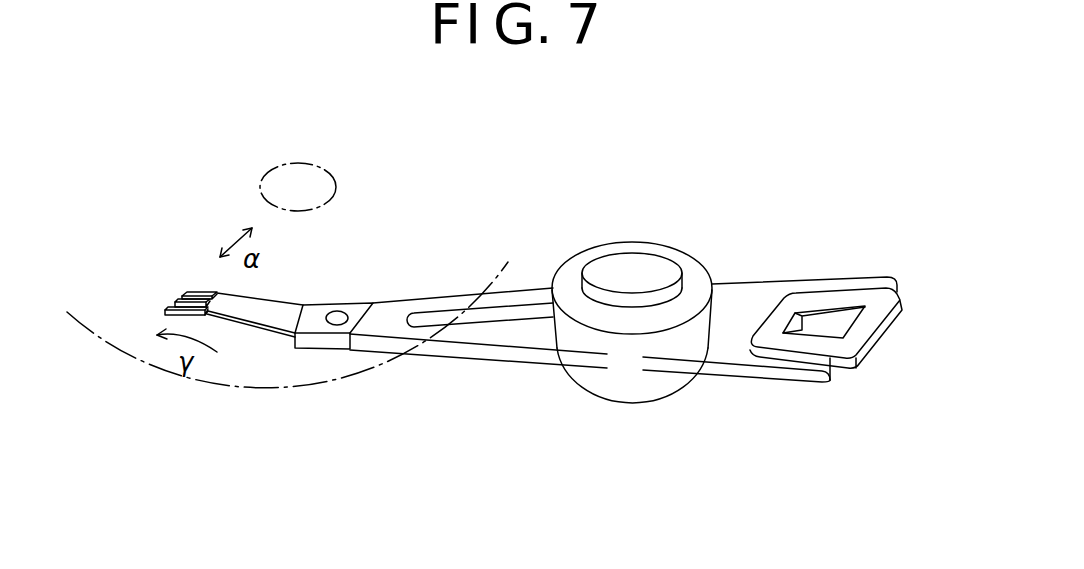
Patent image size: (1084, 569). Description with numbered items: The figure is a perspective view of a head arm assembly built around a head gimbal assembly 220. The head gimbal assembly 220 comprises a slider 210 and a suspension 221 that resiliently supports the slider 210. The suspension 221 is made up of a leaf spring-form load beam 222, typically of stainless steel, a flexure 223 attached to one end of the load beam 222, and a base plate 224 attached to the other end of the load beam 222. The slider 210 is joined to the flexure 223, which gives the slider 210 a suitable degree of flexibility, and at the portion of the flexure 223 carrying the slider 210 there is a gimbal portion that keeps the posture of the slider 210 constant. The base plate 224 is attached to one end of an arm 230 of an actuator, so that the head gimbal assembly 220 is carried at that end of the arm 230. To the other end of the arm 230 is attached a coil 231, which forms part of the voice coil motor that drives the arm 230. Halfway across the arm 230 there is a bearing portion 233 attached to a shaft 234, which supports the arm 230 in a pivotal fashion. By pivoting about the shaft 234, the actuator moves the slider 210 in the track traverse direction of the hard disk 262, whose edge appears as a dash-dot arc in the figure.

The slider 210 is at (197, 290).
The flexure 223 is at (172, 307).
The suspension 221 is at (278, 296).
The head gimbal assembly 220 is at (278, 347).
The load beam 222 is at (302, 310).
The base plate 224 is at (363, 300).
The arm 230 is at (440, 352).
The coil 231 is at (884, 345).
The bearing portion 233 is at (570, 270).
The shaft 234 is at (652, 268).
The hard disk 262 is at (198, 380).